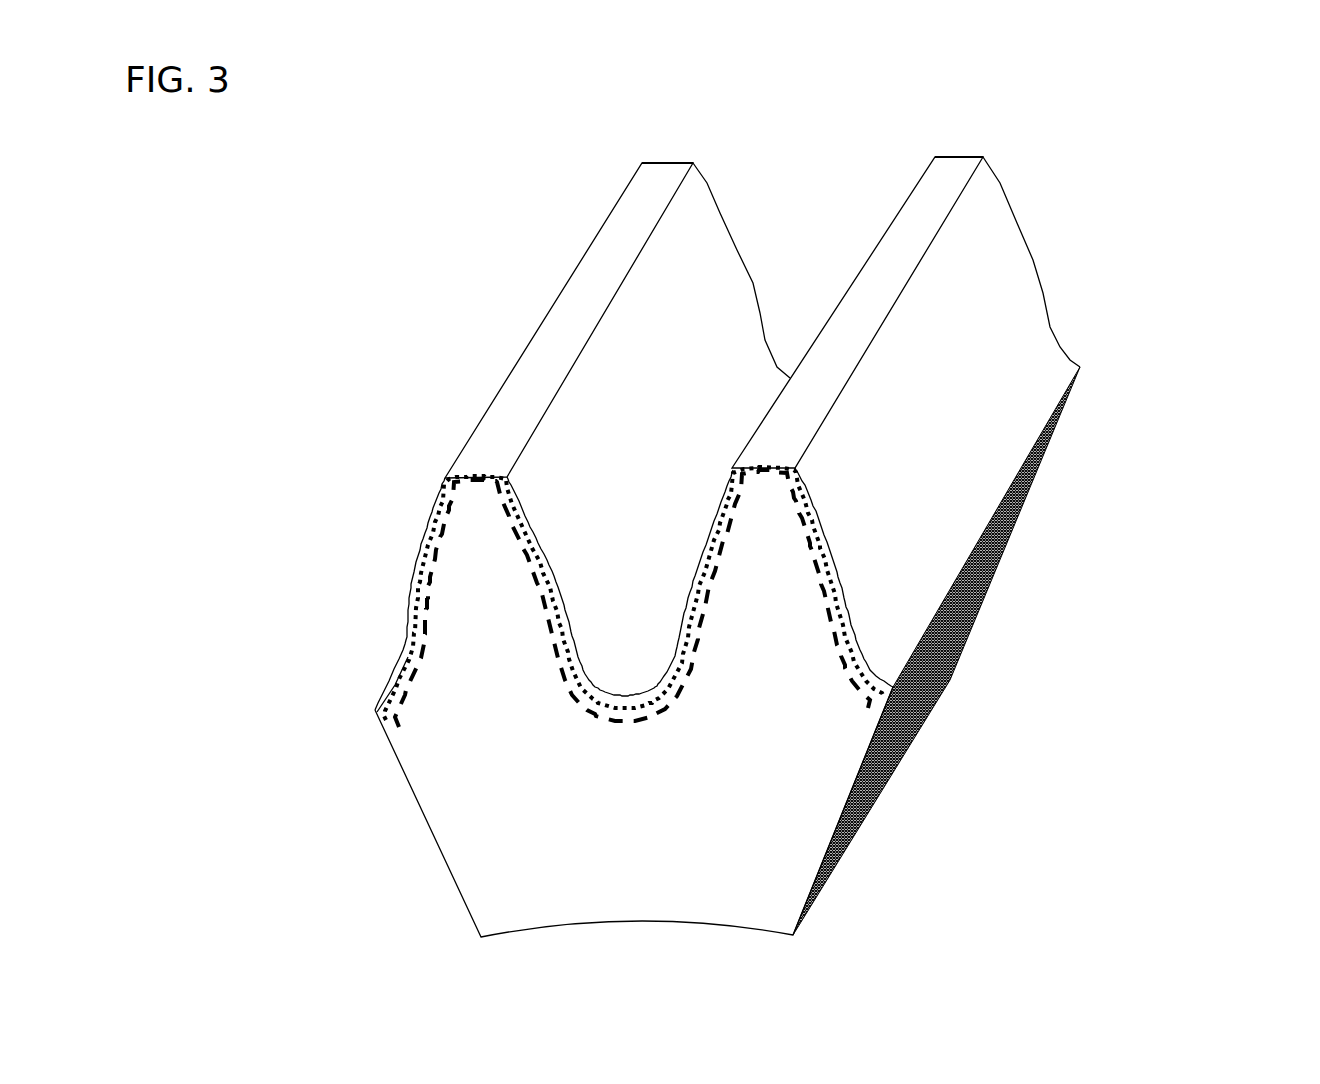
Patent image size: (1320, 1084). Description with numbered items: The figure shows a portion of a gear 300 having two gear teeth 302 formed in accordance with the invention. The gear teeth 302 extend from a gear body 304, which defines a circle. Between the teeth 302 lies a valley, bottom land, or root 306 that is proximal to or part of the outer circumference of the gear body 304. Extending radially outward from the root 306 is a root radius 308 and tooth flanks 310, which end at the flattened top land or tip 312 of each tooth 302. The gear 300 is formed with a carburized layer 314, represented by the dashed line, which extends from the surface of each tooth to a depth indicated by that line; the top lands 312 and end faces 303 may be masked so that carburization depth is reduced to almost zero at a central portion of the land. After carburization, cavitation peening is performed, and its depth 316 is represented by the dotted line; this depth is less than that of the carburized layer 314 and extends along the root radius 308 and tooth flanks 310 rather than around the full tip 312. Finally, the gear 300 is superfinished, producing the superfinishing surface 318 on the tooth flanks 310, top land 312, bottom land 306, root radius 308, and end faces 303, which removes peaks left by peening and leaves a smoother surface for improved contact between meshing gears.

The gear 300 is at (1165, 174).
The gear teeth 302 is at (520, 367).
The end faces 303 is at (504, 615).
The gear body 304 is at (795, 848).
The root 306 is at (607, 750).
The root radius 308 is at (735, 343).
The tooth flanks 310 is at (712, 230).
The top land 312 is at (657, 182).
The carburized layer 314 is at (833, 607).
The cavitation peening 316 is at (550, 602).
The superfinishing surface 318 is at (633, 296).